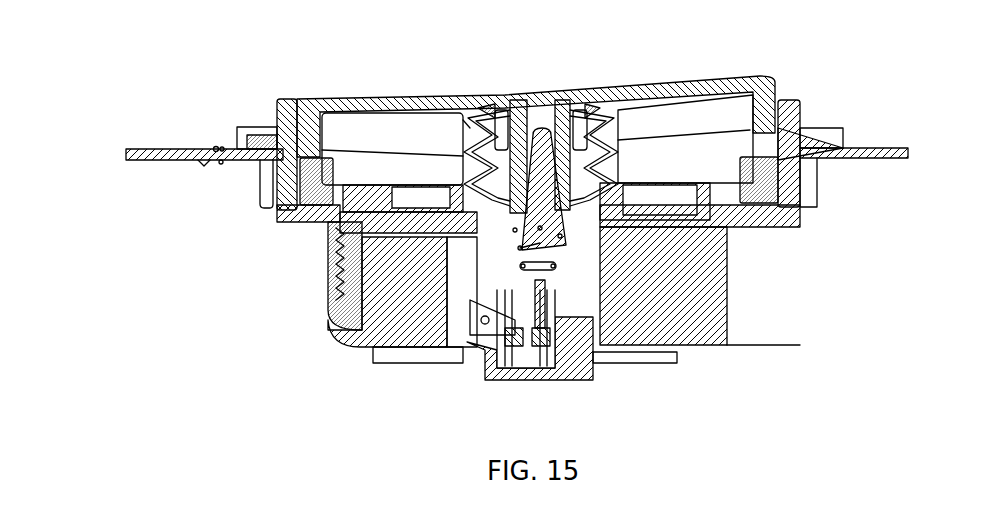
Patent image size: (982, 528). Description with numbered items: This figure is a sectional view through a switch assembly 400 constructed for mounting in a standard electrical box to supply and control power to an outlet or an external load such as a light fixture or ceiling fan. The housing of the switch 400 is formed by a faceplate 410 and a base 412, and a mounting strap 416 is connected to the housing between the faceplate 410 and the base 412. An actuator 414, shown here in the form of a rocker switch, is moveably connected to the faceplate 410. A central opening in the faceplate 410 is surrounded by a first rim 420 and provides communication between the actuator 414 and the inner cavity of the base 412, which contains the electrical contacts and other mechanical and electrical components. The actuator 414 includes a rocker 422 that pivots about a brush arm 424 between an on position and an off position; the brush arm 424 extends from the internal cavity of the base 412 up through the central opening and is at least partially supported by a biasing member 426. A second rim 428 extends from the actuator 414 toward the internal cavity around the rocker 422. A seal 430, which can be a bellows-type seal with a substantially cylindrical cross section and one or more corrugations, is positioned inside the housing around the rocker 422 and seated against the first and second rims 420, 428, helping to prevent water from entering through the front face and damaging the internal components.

The switch assembly 400 is at (818, 98).
The faceplate 410 is at (840, 130).
The base 412 is at (730, 343).
The actuator 414 is at (352, 100).
The mounting strap 416 is at (157, 150).
The first rim 420 is at (596, 177).
The rocker 422 is at (565, 120).
The brush arm 424 is at (530, 140).
The biasing member 426 is at (495, 363).
The second rim 428 is at (500, 118).
The seal 430 is at (463, 124).